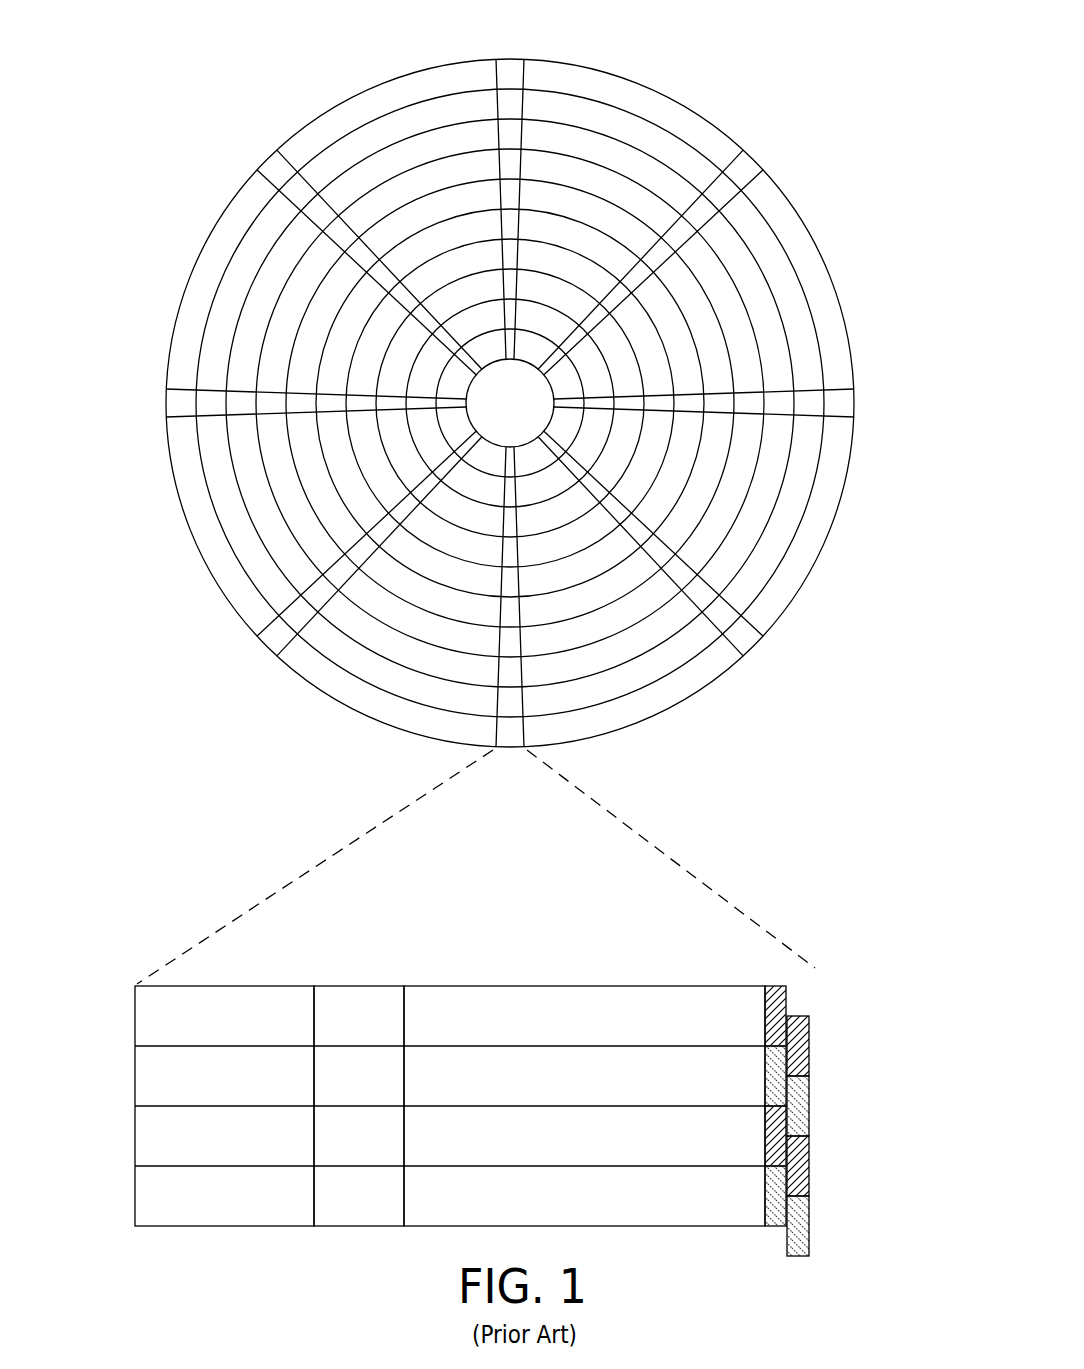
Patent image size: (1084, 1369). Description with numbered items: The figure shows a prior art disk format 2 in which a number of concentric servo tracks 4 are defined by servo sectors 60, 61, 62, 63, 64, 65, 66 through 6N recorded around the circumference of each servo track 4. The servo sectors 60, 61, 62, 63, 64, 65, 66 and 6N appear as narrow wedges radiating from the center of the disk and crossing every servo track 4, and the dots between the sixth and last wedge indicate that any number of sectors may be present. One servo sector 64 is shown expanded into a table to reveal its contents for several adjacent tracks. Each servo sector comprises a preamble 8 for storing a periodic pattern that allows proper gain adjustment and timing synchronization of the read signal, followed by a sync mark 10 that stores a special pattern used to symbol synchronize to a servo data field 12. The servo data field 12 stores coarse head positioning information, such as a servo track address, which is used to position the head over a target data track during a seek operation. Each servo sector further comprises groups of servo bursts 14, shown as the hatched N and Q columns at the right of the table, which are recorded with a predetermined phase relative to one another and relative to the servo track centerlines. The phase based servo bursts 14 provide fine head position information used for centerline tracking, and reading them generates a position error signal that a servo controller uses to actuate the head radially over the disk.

The disk format 2 is at (257, 63).
The servo tracks 4 is at (627, 128).
The servo sector 60 is at (510, 70).
The servo sector 61 is at (743, 165).
The servo sector 62 is at (843, 403).
The servo sector 63 is at (747, 647).
The servo sector 64 is at (357, 828).
The servo sector 65 is at (272, 643).
The servo sector 66 is at (172, 402).
The servo sector 6N is at (273, 167).
The preamble 8 is at (233, 986).
The sync mark 10 is at (361, 986).
The servo data field 12 is at (568, 986).
The servo bursts 14 is at (803, 985).